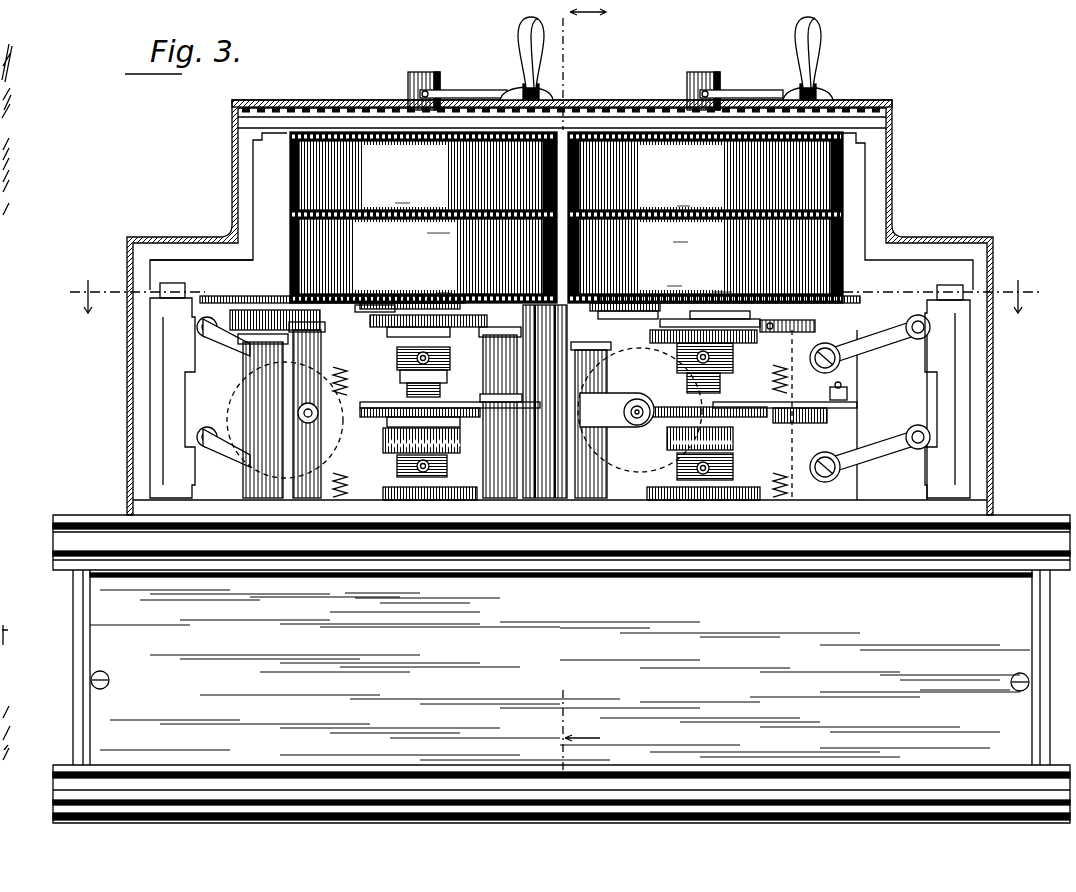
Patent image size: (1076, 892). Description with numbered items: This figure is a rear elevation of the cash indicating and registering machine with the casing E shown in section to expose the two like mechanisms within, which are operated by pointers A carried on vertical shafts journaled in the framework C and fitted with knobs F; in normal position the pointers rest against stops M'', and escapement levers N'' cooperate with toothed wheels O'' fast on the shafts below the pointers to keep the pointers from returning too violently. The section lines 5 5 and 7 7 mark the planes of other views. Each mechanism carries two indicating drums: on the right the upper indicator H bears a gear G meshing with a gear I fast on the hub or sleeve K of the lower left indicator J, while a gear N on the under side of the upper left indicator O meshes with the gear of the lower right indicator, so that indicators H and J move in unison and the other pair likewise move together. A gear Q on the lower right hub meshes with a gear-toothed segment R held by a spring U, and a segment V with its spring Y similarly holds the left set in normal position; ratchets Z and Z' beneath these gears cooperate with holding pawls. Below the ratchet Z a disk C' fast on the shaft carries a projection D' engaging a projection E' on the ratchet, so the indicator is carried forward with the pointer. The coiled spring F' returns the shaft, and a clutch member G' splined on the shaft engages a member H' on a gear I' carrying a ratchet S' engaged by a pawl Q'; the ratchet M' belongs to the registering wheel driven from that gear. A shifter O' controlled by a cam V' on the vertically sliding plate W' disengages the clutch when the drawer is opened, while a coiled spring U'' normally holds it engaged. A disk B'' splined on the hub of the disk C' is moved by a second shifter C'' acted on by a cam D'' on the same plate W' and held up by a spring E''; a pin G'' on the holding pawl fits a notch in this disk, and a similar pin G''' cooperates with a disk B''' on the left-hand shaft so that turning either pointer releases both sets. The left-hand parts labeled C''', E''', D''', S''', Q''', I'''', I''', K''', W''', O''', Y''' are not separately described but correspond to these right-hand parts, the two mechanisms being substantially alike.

The casing E is at (560, 307).
The gear G is at (429, 217).
The gear I is at (707, 217).
The upper right-hand indicator H is at (402, 195).
The ratchet M' is at (438, 226).
The upper left-hand indicator O is at (683, 198).
The gear N is at (680, 235).
The lower left-hand indicator J is at (673, 279).
The ratchet Z is at (362, 288).
The gear Q is at (444, 286).
The hub or sleeve K is at (479, 287).
The ratchet Z' is at (722, 285).
The toothed wheels O'' is at (547, 90).
The escapement levers N'' is at (562, 86).
The stops M'' is at (603, 78).
The pointers A is at (552, 95).
The coiled spring F' is at (551, 52).
The knobs F is at (787, 52).
The section line 7 7 is at (579, 387).
The section line 5 5 is at (553, 296).
The framework C is at (201, 272).
The spring U is at (332, 304).
The vertically sliding plate W' is at (184, 390).
The projection D' is at (193, 336).
The second shifter C'' is at (226, 347).
The cam or shoulder V' is at (210, 459).
The shifter O' is at (226, 463).
The pin G'' is at (568, 412).
The gear I' is at (458, 401).
The cam D'' is at (428, 328).
The projection E' is at (415, 325).
The disk C' is at (375, 320).
The gear-toothed segment R is at (362, 311).
The vertically movable disk B'' is at (396, 350).
The ratchet S' is at (420, 400).
The pawl Q' is at (450, 391).
The coiled spring E'' is at (355, 432).
The clutch member H' is at (432, 440).
The clutch member G' is at (401, 460).
The coiled spring U'' is at (413, 493).
The segment V is at (625, 314).
The spring Y is at (628, 329).
The disk B''' is at (675, 358).
The lever C''' is at (783, 345).
The collar E''' is at (703, 321).
The gear D''' is at (806, 320).
The pin G''' is at (787, 336).
The gear S''' is at (708, 398).
The plate Q''' is at (785, 396).
The stop I'''' is at (824, 390).
The lever I''' is at (620, 422).
The toothed wheel K''' is at (722, 438).
The right bracket W''' is at (982, 399).
The lever O''' is at (865, 451).
The pivot Y''' is at (927, 451).